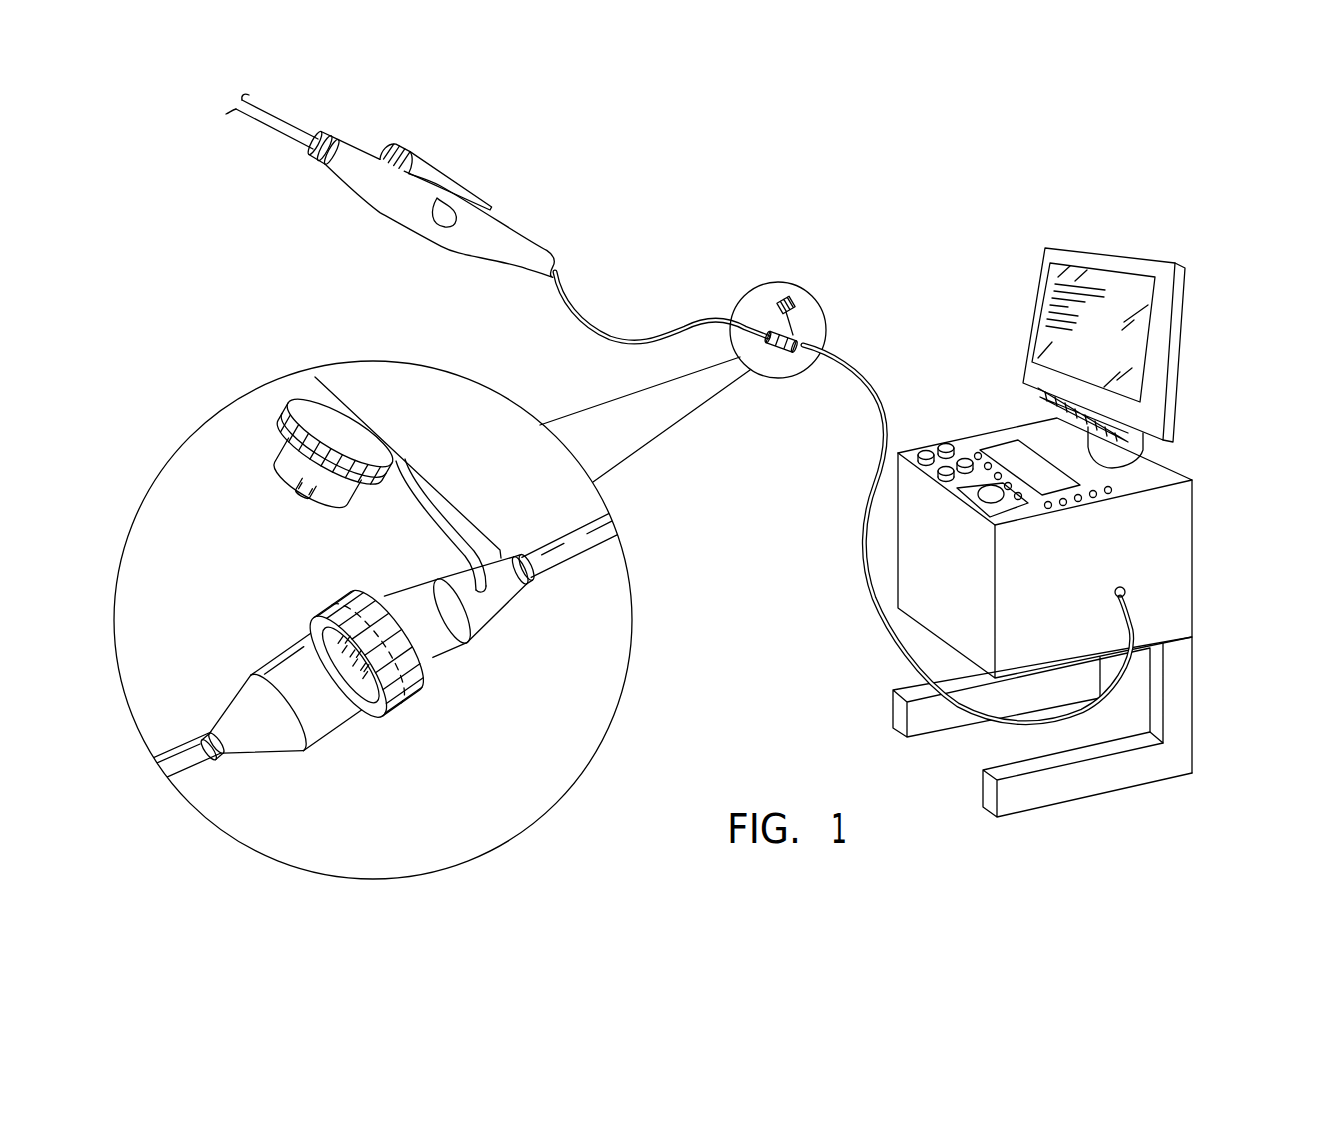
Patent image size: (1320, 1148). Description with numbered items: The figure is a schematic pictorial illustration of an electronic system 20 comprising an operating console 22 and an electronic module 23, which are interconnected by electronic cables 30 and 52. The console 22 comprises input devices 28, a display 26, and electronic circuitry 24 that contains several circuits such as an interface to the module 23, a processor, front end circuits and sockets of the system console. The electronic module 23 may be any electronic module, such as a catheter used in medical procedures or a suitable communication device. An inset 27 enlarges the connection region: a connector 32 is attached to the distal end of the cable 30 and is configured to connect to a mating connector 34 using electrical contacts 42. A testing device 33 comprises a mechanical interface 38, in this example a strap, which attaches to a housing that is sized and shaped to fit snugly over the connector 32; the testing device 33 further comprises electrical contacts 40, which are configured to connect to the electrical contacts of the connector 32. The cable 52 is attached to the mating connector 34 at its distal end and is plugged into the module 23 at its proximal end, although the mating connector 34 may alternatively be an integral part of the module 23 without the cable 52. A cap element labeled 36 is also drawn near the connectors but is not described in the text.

The electronic system 20 is at (1048, 197).
The operating console 22 is at (1222, 272).
The electronic module 23 is at (500, 230).
The electronic circuitry 24 is at (1183, 528).
The display 26 is at (1176, 310).
The inset 27 is at (168, 466).
The input devices 28 is at (925, 449).
The electronic cable 30 is at (558, 533).
The connector 32 is at (418, 584).
The testing device 33 is at (434, 463).
The mating connector 34 is at (232, 694).
The cap 36 is at (811, 302).
The mechanical interface 38 is at (421, 508).
The electrical contacts 40 is at (303, 480).
The electrical contacts 42 is at (348, 678).
The electronic cable 52 is at (715, 317).